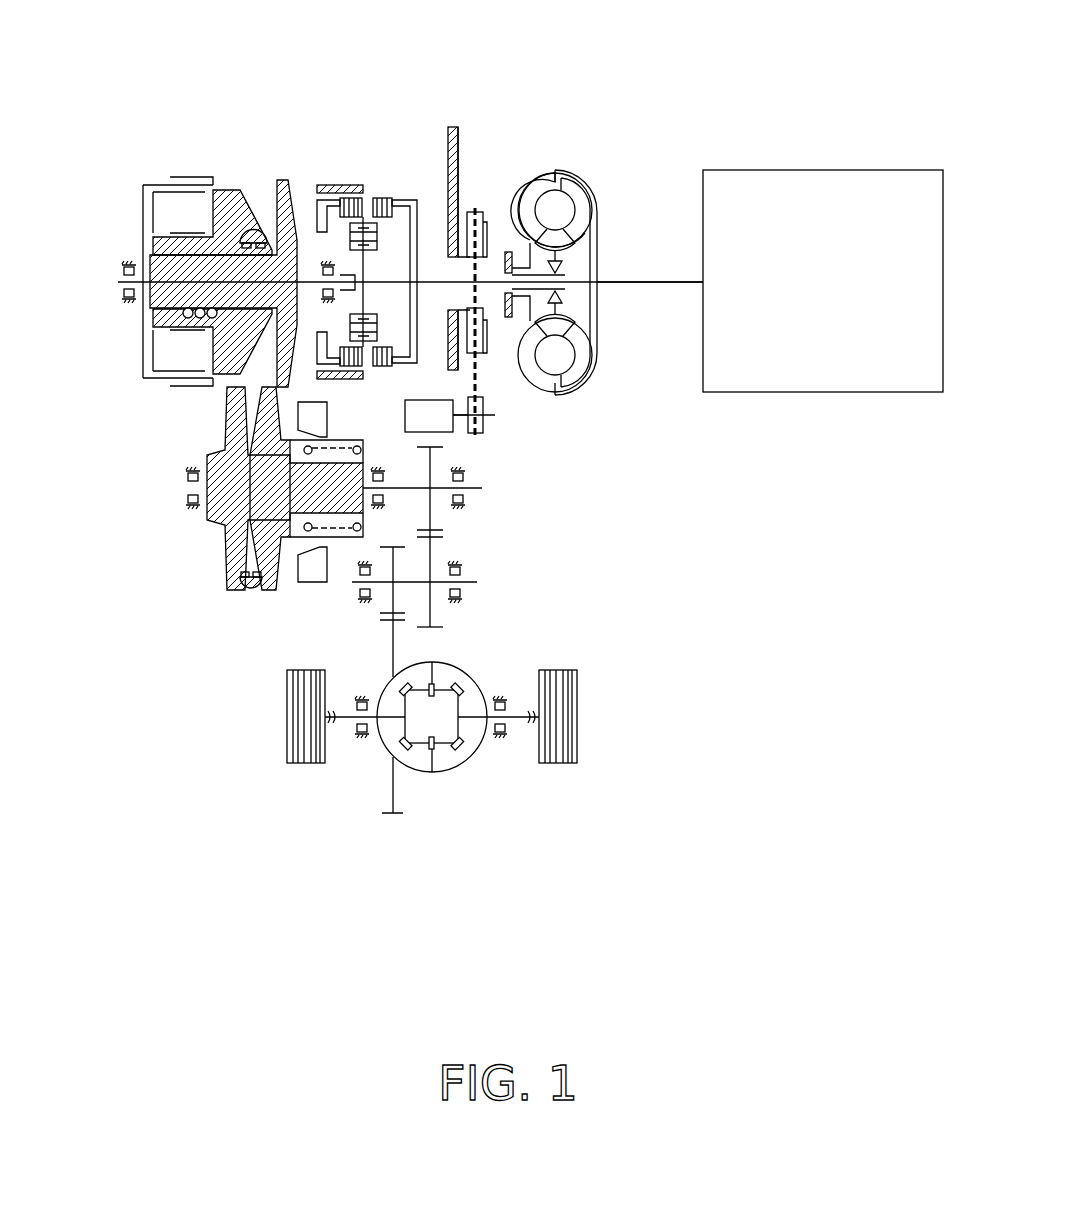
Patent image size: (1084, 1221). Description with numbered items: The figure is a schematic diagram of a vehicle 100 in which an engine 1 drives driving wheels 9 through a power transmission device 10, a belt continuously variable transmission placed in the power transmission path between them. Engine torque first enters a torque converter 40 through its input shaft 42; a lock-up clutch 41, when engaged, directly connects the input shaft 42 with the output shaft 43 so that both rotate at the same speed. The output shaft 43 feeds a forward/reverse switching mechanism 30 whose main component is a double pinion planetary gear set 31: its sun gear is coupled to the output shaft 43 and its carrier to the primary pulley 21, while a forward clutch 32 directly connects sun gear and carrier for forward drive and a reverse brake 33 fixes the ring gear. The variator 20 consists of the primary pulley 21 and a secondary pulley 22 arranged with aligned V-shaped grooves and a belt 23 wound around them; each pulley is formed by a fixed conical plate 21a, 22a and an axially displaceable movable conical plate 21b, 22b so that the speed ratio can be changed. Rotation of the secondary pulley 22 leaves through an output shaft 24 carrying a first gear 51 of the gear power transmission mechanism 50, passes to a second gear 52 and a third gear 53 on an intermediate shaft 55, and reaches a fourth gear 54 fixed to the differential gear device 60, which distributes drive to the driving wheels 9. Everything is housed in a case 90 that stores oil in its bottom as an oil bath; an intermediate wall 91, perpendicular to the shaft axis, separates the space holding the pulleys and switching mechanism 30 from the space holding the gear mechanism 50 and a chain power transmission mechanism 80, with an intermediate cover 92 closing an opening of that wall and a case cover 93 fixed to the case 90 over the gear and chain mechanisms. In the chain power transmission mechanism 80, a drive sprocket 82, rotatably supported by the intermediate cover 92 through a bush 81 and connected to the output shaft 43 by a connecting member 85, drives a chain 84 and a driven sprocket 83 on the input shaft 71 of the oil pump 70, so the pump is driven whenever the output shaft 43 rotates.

The engine 1 is at (765, 170).
The driving wheels 9 is at (287, 705).
The power transmission device 10 is at (165, 78).
The variator 20 is at (120, 178).
The primary pulley 21 is at (268, 178).
The fixed conical plate 21a is at (285, 178).
The movable conical plate 21b is at (226, 178).
The secondary pulley 22 is at (322, 598).
The fixed conical plate 22a is at (223, 553).
The movable conical plate 22b is at (272, 600).
The belt 23 is at (255, 226).
The output shaft 24 is at (408, 488).
The forward/reverse switching mechanism 30 is at (355, 110).
The double pinion planetary gear set 31 is at (372, 197).
The forward clutch 32 is at (390, 197).
The reverse brake 33 is at (345, 195).
The torque converter 40 is at (540, 158).
The lock-up clutch 41 is at (597, 255).
The input shaft 42 is at (612, 285).
The output shaft 43 is at (483, 230).
The gear power transmission mechanism 50 is at (487, 552).
The first gear 51 is at (432, 518).
The second gear 52 is at (432, 612).
The third gear 53 is at (392, 547).
The fourth gear 54 is at (402, 816).
The intermediate shaft 55 is at (466, 594).
The differential gear device 60 is at (487, 668).
The oil pump 70 is at (405, 405).
The input shaft 71 is at (456, 422).
The chain power transmission mechanism 80 is at (505, 410).
The bush 81 is at (455, 312).
The drive sprocket 82 is at (485, 355).
The driven sprocket 83 is at (483, 437).
The chain 84 is at (480, 426).
The connecting member 85 is at (462, 300).
The case 90 is at (320, 185).
The intermediate wall 91 is at (453, 150).
The intermediate cover 92 is at (447, 197).
The case cover 93 is at (508, 215).
The vehicle 100 is at (812, 688).